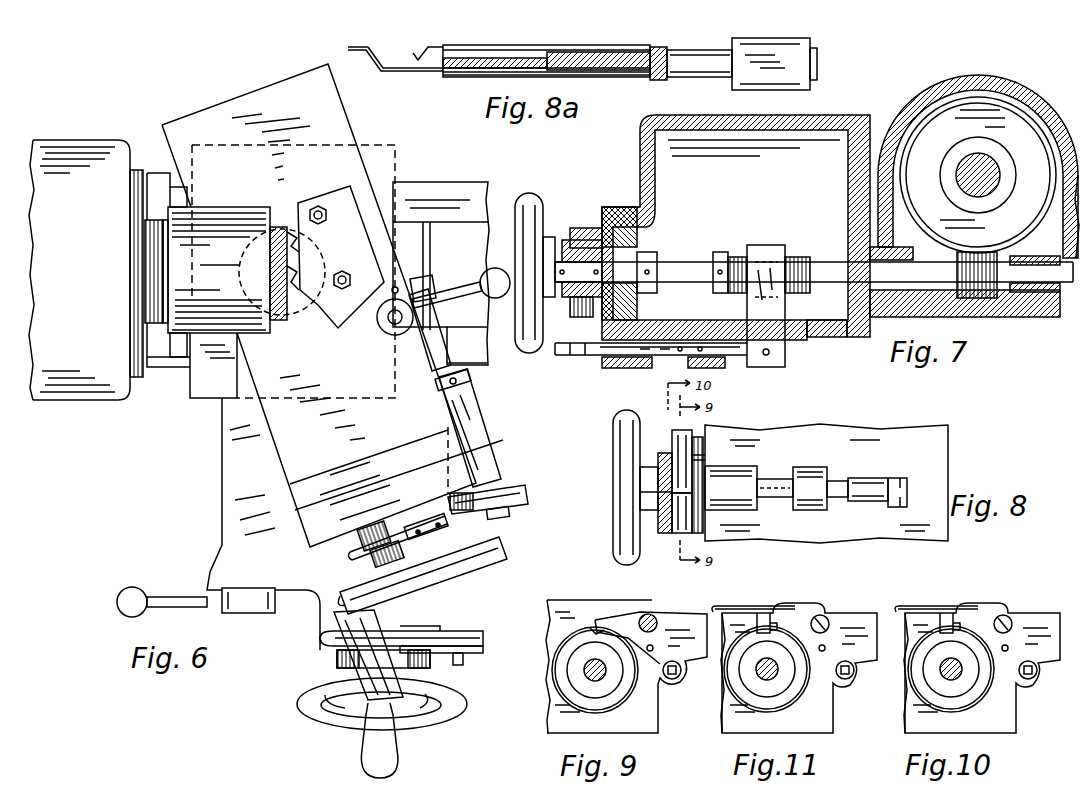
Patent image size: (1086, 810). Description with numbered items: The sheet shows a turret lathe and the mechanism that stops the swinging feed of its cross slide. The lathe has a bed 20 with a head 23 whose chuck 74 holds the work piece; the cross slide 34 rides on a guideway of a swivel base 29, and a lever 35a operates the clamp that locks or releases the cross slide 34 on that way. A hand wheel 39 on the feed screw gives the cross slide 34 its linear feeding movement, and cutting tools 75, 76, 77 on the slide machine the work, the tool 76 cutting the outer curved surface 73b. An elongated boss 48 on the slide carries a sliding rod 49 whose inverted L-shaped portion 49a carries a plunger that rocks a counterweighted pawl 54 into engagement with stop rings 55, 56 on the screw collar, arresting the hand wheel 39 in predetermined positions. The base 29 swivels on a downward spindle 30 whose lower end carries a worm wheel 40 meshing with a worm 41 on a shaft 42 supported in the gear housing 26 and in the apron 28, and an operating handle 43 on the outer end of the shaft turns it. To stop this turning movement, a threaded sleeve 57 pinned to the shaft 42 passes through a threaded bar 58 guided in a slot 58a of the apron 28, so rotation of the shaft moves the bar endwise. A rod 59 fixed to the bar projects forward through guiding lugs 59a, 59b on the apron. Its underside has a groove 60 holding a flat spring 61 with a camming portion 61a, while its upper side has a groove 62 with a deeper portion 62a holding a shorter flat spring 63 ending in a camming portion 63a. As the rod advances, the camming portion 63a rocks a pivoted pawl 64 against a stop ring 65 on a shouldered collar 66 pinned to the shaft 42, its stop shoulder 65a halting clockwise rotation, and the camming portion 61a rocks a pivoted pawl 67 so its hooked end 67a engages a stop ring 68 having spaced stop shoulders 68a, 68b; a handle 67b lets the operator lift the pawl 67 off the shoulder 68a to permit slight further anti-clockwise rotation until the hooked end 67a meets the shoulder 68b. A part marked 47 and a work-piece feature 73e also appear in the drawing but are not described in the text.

In FIG. 6, the bed 20 is at (462, 190).
In FIG. 6, the head 23 is at (95, 398).
In FIG. 7, the gear housing 26 is at (1020, 92).
In FIG. 6, the apron 28 is at (222, 472).
In FIG. 7, the apron 28 is at (785, 118).
In FIG. 8, the apron 28 is at (870, 426).
In FIG. 6, the base 29 is at (388, 163).
In FIG. 7, the spindle 30 is at (1000, 168).
In FIG. 6, the cross slide 34 is at (338, 128).
In FIG. 6, the lever 35a is at (472, 282).
In FIG. 6, the hand wheel 39 is at (512, 548).
In FIG. 7, the worm wheel 40 is at (1035, 210).
In FIG. 7, the worm 41 is at (980, 300).
In FIG. 7, the shaft 42 is at (828, 263).
In FIG. 9, the shaft 42 is at (585, 670).
In FIG. 11, the shaft 42 is at (757, 672).
In FIG. 10, the shaft 42 is at (940, 672).
In FIG. 6, the operating handle 43 is at (455, 713).
In FIG. 7, the operating handle 43 is at (538, 352).
In FIG. 8, the operating handle 43 is at (620, 512).
In FIG. 6, the control handle 47 is at (170, 597).
In FIG. 6, the elongated boss 48 is at (488, 448).
In FIG. 6, the rod 49 is at (498, 482).
In FIG. 6, the inverted L-shaped portion 49a is at (507, 514).
In FIG. 6, the rockable pawl 54 is at (527, 490).
In FIG. 6, the stop ring 55 is at (380, 562).
In FIG. 6, the second stop ring 56 is at (372, 545).
In FIG. 7, the threaded sleeve 57 is at (734, 252).
In FIG. 8A, the bar 58 is at (795, 44).
In FIG. 7, the bar 58 is at (785, 300).
In FIG. 8, the bar 58 is at (868, 477).
In FIG. 7, the slot 58a is at (818, 338).
In FIG. 8, the slot 58a is at (900, 480).
In FIG. 8A, the rod 59 is at (696, 52).
In FIG. 7, the rod 59 is at (740, 360).
In FIG. 8, the rod 59 is at (776, 498).
In FIG. 7, the guiding lug 59a is at (630, 368).
In FIG. 8, the guiding lug 59a is at (750, 468).
In FIG. 7, the guiding lug 59b is at (725, 368).
In FIG. 8, the guiding lug 59b is at (812, 468).
In FIG. 8A, the groove 60 is at (592, 75).
In FIG. 8A, the flat spring 61 is at (475, 70).
In FIG. 8A, the camming portion 61a is at (372, 49).
In FIG. 7, the camming portion 61a is at (565, 355).
In FIG. 8, the camming portion 61a is at (640, 492).
In FIG. 8A, the groove 62 is at (575, 52).
In FIG. 8A, the portion of increased depth 62a is at (515, 56).
In FIG. 8A, the flat spring 63 is at (478, 48).
In FIG. 8A, the camming portion 63a is at (415, 52).
In FIG. 7, the camming portion 63a is at (594, 356).
In FIG. 8, the camming portion 63a is at (752, 440).
In FIG. 6, the pivoted pawl 64 is at (485, 636).
In FIG. 8, the pivoted pawl 64 is at (690, 430).
In FIG. 9, the pivoted pawl 64 is at (645, 612).
In FIG. 7, the stop ring 65 is at (580, 228).
In FIG. 8, the stop ring 65 is at (694, 518).
In FIG. 9, the stop ring 65 is at (620, 688).
In FIG. 9, the stop shoulder 65a is at (592, 628).
In FIG. 7, the shouldered collar 66 is at (588, 228).
In FIG. 6, the pivoted pawl 67 is at (486, 649).
In FIG. 8, the pivoted pawl 67 is at (692, 438).
In FIG. 11, the pivoted pawl 67 is at (850, 618).
In FIG. 10, the pivoted pawl 67 is at (1033, 618).
In FIG. 11, the hooked end 67a is at (757, 622).
In FIG. 10, the hooked end 67a is at (940, 622).
In FIG. 6, the handle 67b is at (320, 638).
In FIG. 11, the handle 67b is at (770, 591).
In FIG. 10, the handle 67b is at (958, 591).
In FIG. 6, the stop ring 68 is at (337, 656).
In FIG. 7, the stop ring 68 is at (572, 228).
In FIG. 8, the stop ring 68 is at (668, 528).
In FIG. 11, the stop ring 68 is at (792, 688).
In FIG. 10, the stop ring 68 is at (975, 688).
In FIG. 11, the stop shoulder 68a is at (755, 635).
In FIG. 10, the stop shoulder 68a is at (958, 636).
In FIG. 11, the stop shoulder 68b is at (778, 626).
In FIG. 10, the stop shoulder 68b is at (962, 626).
In FIG. 6, the outer curved surface 73b is at (292, 308).
In FIG. 6, the chuck jaw face 73e is at (268, 272).
In FIG. 6, the chuck 74 is at (205, 235).
In FIG. 6, the cutting tool 75 is at (324, 305).
In FIG. 6, the cutting tool 76 is at (292, 240).
In FIG. 6, the cutting tool 77 is at (292, 272).